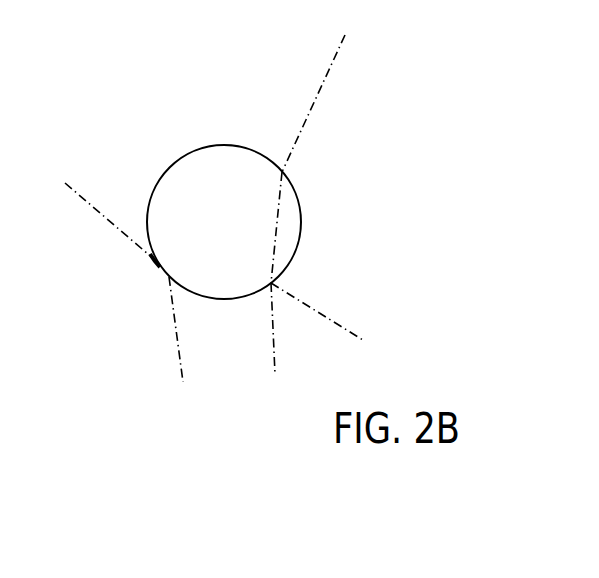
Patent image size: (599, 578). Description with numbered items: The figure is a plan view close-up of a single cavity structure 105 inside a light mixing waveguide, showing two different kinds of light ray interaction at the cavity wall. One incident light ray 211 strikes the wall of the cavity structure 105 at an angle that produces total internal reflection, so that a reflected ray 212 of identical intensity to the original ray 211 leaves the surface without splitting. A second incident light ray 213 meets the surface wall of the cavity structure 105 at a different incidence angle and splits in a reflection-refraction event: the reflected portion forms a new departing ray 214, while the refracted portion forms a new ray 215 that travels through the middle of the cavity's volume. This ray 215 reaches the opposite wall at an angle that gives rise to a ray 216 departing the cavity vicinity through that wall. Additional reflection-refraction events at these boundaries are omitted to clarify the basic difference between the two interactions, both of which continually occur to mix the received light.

The cavity structure 105 is at (300, 231).
The incident light ray 211 is at (193, 329).
The reflected ray 212 is at (110, 221).
The incident light ray 213 is at (293, 328).
The departing ray 214 is at (317, 311).
The refracted ray 215 is at (266, 227).
The departing ray 216 is at (309, 103).